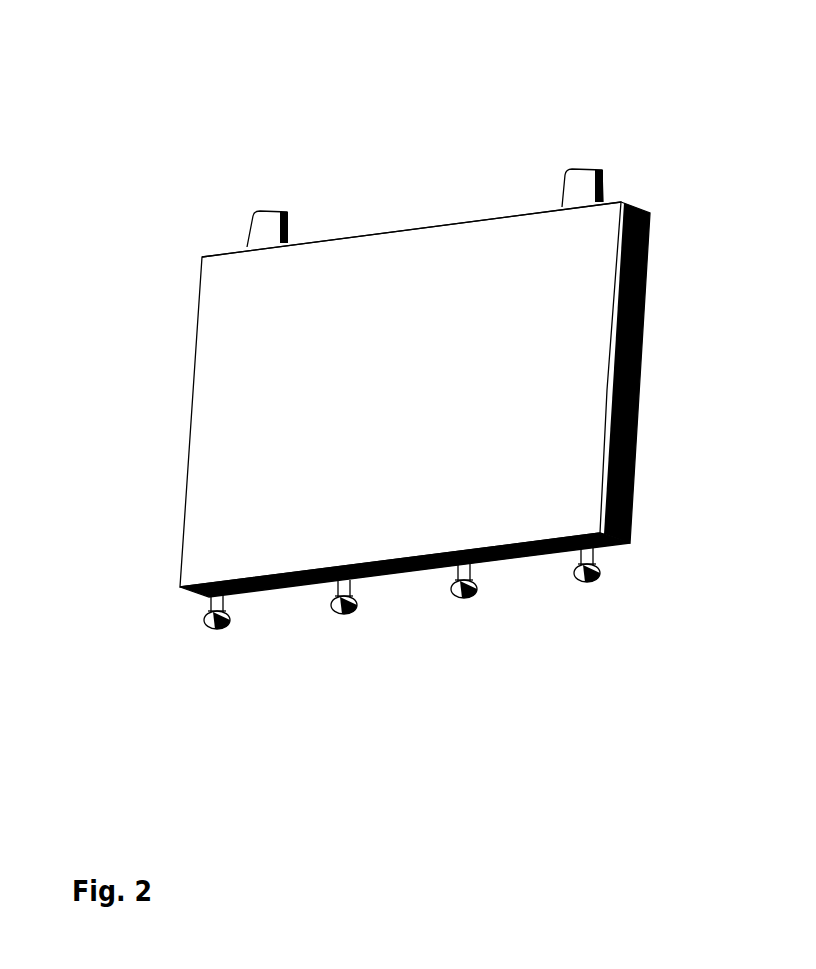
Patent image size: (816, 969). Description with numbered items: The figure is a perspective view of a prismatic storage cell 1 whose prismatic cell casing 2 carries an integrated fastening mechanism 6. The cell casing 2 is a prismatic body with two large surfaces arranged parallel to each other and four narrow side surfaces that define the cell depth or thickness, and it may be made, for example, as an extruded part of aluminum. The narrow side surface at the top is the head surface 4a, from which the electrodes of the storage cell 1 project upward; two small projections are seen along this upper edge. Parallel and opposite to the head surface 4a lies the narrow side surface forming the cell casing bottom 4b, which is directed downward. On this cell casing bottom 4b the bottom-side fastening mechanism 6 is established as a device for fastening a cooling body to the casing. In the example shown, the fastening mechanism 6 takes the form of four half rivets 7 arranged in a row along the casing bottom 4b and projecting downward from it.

The prismatic storage cell 1 is at (345, 388).
The prismatic cell casing 2 is at (185, 442).
The head surface 4a is at (429, 225).
The cell casing bottom 4b is at (413, 580).
The fastening mechanism 6 is at (353, 607).
The half rivet 7 is at (333, 612).